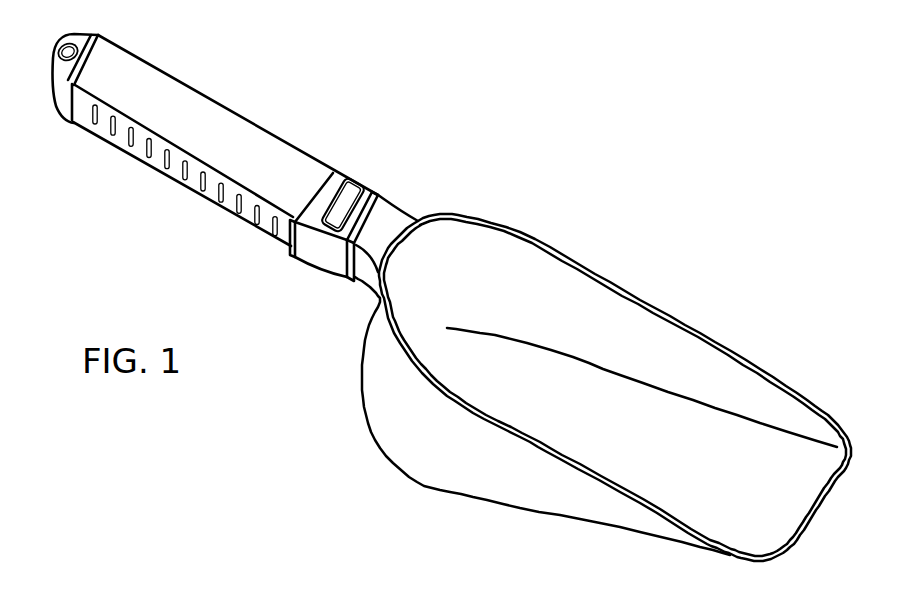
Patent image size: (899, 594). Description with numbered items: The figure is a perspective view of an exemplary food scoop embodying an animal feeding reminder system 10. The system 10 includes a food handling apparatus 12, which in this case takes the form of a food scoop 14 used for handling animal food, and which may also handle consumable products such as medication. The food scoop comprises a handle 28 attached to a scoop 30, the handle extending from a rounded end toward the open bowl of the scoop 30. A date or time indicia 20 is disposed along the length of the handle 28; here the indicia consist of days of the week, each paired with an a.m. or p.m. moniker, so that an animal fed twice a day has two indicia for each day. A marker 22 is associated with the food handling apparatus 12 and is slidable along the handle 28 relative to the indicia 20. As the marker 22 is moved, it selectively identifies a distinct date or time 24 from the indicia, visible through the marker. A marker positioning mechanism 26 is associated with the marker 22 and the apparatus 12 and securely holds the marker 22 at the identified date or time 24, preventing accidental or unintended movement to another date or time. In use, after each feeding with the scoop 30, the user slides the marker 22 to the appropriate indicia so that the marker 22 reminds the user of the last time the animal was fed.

The animal feeding reminder system 10 is at (549, 120).
The food handling apparatus 12 is at (451, 291).
The food scoop 14 is at (451, 291).
The date or time indicia 20 is at (225, 140).
The marker 22 is at (380, 174).
The distinct date or time 24 is at (365, 198).
The marker positioning mechanism 26 is at (342, 205).
The handle 28 is at (131, 72).
The scoop 30 is at (603, 378).